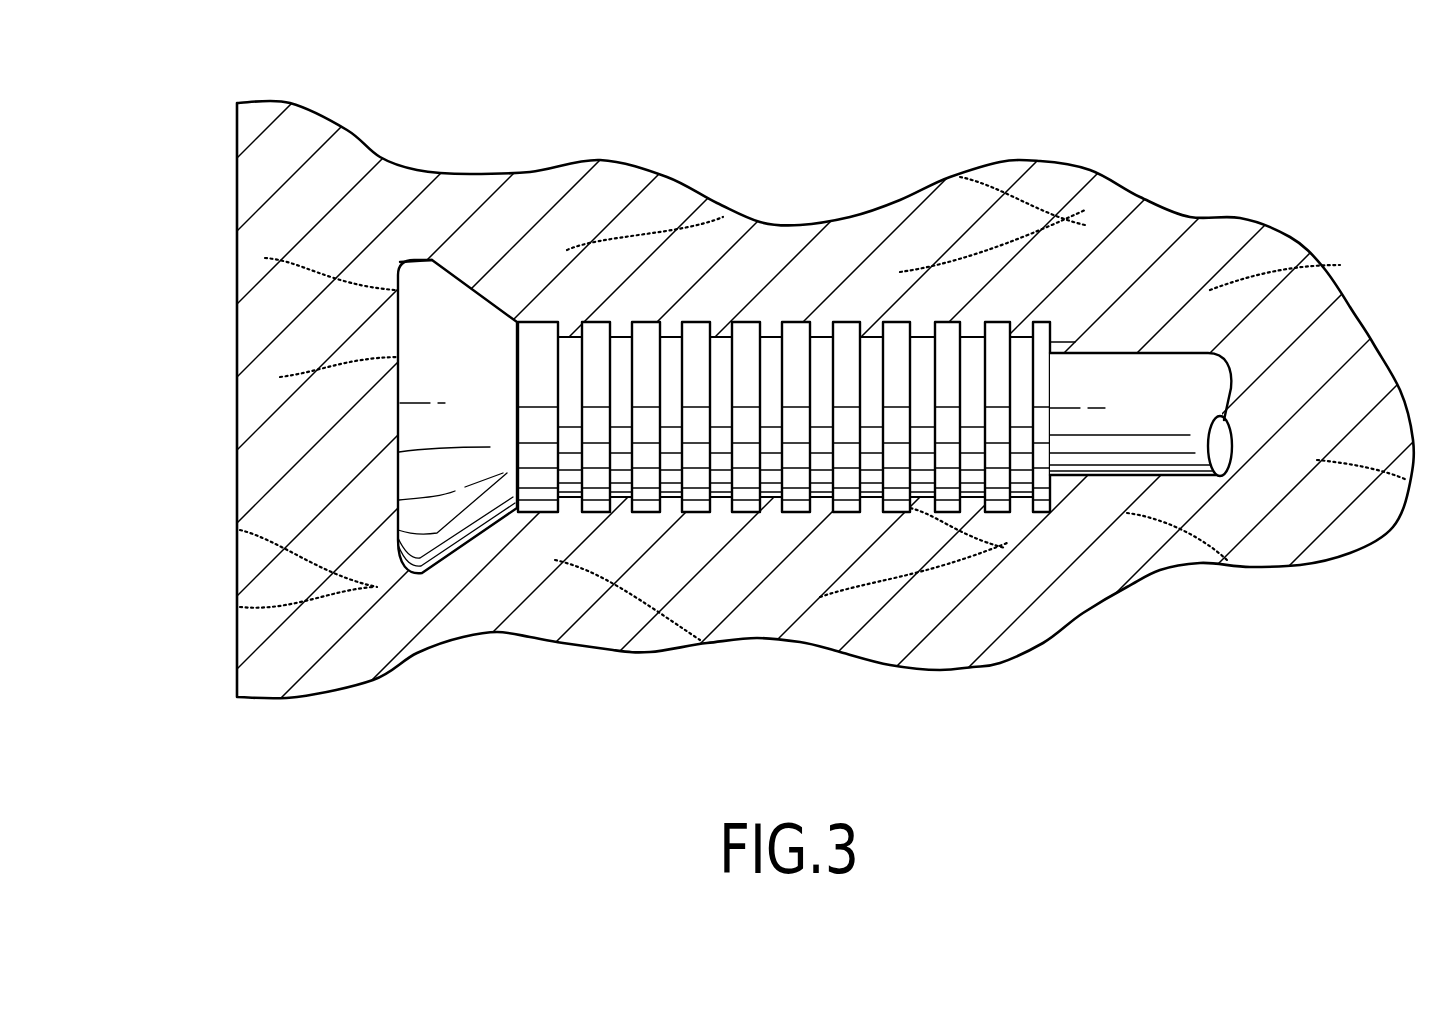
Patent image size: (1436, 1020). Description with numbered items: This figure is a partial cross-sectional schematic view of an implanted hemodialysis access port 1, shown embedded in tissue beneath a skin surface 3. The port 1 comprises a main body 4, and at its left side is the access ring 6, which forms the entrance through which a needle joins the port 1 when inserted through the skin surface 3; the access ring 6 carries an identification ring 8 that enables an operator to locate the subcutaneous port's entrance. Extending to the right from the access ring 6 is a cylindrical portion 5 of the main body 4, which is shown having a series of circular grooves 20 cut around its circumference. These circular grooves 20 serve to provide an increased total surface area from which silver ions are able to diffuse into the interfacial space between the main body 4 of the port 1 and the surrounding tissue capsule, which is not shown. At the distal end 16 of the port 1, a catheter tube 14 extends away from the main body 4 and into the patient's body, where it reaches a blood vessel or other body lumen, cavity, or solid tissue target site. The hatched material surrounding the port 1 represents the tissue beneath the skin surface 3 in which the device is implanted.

The hemodialysis access port 1 is at (821, 422).
The skin surface 3 is at (718, 405).
The main body 4 is at (762, 422).
The cylindrical portion 5 is at (847, 322).
The access ring 6 is at (465, 368).
The identification ring 8 is at (407, 262).
The catheter tube 14 is at (1175, 408).
The distal end 16 is at (1053, 342).
The circular grooves 20 is at (772, 327).